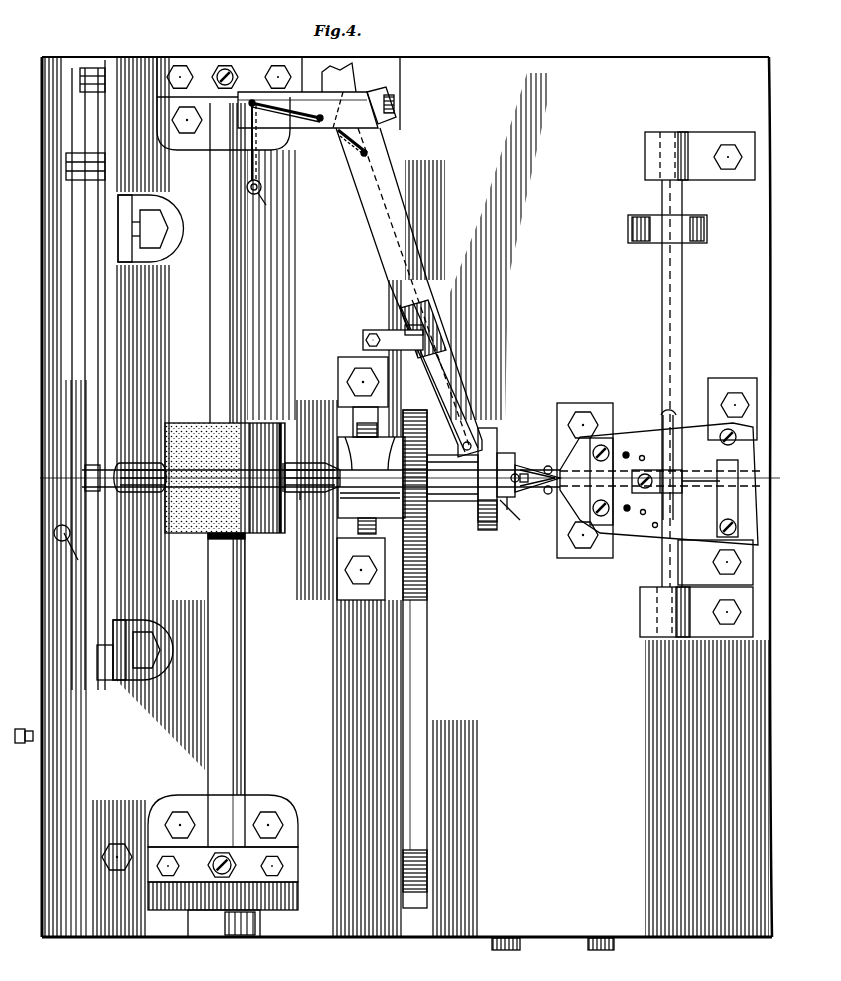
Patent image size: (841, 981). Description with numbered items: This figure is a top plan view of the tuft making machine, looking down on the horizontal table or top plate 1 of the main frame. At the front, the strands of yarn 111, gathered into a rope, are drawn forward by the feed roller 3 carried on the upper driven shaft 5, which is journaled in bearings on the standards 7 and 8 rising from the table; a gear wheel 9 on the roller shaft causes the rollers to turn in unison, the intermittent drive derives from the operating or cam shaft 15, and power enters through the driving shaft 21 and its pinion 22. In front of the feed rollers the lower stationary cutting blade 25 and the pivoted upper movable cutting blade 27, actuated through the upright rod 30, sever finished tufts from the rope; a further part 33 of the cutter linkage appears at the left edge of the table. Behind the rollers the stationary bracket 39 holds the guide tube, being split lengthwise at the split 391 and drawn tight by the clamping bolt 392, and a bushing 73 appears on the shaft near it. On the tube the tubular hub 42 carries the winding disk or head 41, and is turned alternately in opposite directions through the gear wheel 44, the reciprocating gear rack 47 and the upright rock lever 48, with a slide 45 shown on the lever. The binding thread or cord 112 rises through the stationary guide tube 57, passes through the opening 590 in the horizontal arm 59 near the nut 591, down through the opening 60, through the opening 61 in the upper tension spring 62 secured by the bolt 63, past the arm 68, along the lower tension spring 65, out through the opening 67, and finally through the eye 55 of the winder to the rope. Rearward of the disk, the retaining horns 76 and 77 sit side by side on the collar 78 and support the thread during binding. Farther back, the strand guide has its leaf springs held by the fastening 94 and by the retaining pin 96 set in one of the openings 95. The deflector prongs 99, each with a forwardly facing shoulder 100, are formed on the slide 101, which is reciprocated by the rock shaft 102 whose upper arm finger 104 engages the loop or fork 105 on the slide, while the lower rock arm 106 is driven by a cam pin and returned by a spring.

The table or top plate 1 is at (407, 497).
The feed roller 3 is at (225, 468).
The upper driven shaft 5 is at (212, 330).
The standard 7 is at (167, 72).
The standard 8 is at (217, 865).
The gear wheel 9 is at (148, 906).
The operating or cam shaft 15 is at (493, 945).
The driving shaft 21 is at (590, 946).
The pinion 22 is at (736, 442).
The lower stationary cutting blade 25 is at (86, 572).
The upper movable cutting blade 27 is at (80, 252).
The upright rod 30 is at (78, 489).
The bolt 33 is at (33, 736).
The stationary bracket 39 is at (371, 437).
The winding disk or head 41 is at (497, 445).
The tubular hub 42 is at (452, 491).
The gear wheel 44 is at (422, 542).
The slide 45 is at (430, 322).
The gear rack 47 is at (373, 598).
The rock lever 48 is at (412, 737).
The eye 55 is at (504, 522).
The stationary guide tube 57 is at (267, 196).
The horizontal arm 59 is at (308, 110).
The opening 60 is at (319, 122).
The opening 61 is at (370, 153).
The upper tension spring 62 is at (392, 200).
The bolt 63 is at (392, 106).
The lower tension spring 65 is at (448, 372).
The opening 67 is at (480, 430).
The arm 68 is at (339, 95).
The bushing 73 is at (370, 495).
The retaining horn 76 is at (512, 500).
The retaining horn 77 is at (522, 472).
The collar 78 is at (478, 526).
The upright screw or fastening 94 is at (729, 412).
The opening 95 is at (660, 452).
The retaining pin 96 is at (627, 505).
The prong 99 is at (560, 470).
The forwardly facing shoulder 100 is at (548, 495).
The slide 101 is at (702, 485).
The rock shaft 102 is at (674, 305).
The finger 104 is at (660, 430).
The loop or fork 105 is at (676, 480).
The lower rock arm 106 is at (696, 229).
The strands of yarn 111 is at (305, 488).
The binding thread or cord 112 is at (256, 167).
The split 391 is at (344, 462).
The clamping bolt 392 is at (356, 532).
The opening 590 is at (246, 108).
The nut 591 is at (217, 81).